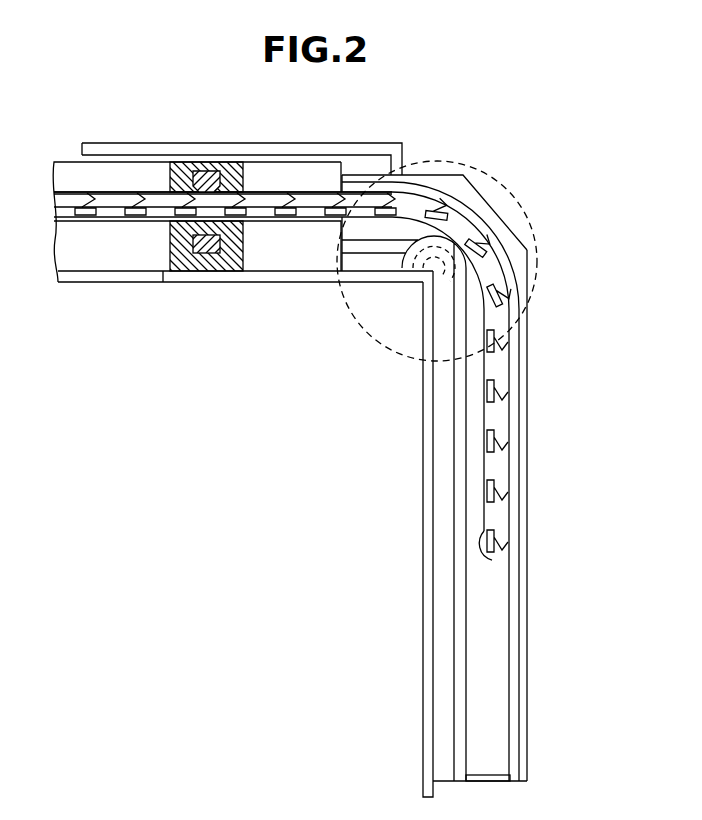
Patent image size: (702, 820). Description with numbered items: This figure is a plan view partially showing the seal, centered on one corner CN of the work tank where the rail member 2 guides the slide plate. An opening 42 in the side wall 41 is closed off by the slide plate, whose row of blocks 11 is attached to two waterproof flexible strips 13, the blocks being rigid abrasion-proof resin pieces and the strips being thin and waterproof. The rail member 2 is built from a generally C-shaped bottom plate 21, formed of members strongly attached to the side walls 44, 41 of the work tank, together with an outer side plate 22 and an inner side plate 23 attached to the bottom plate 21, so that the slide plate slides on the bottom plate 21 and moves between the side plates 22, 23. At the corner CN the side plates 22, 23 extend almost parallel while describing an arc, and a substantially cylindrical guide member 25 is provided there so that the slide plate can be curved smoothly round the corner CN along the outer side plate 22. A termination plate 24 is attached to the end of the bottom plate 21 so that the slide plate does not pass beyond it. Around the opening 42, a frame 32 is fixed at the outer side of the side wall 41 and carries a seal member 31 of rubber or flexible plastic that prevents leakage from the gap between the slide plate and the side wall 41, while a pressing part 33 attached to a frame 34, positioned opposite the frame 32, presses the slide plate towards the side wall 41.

The rail member 2 is at (478, 210).
The corners CN is at (532, 227).
The blocks 11 is at (498, 462).
The waterproof flexible strips 13 is at (492, 560).
The bottom plate 21 is at (528, 700).
The outer side plate 22 is at (515, 747).
The side plate 23 is at (460, 658).
The termination plate 24 is at (487, 777).
The guide members 25 is at (438, 302).
The seal member 31 is at (200, 260).
The frame 32 is at (215, 256).
The pressing part 33 is at (205, 170).
The frame 34 is at (208, 168).
The side wall 41 is at (257, 283).
The opening 42 is at (112, 280).
The side wall 44 is at (427, 483).